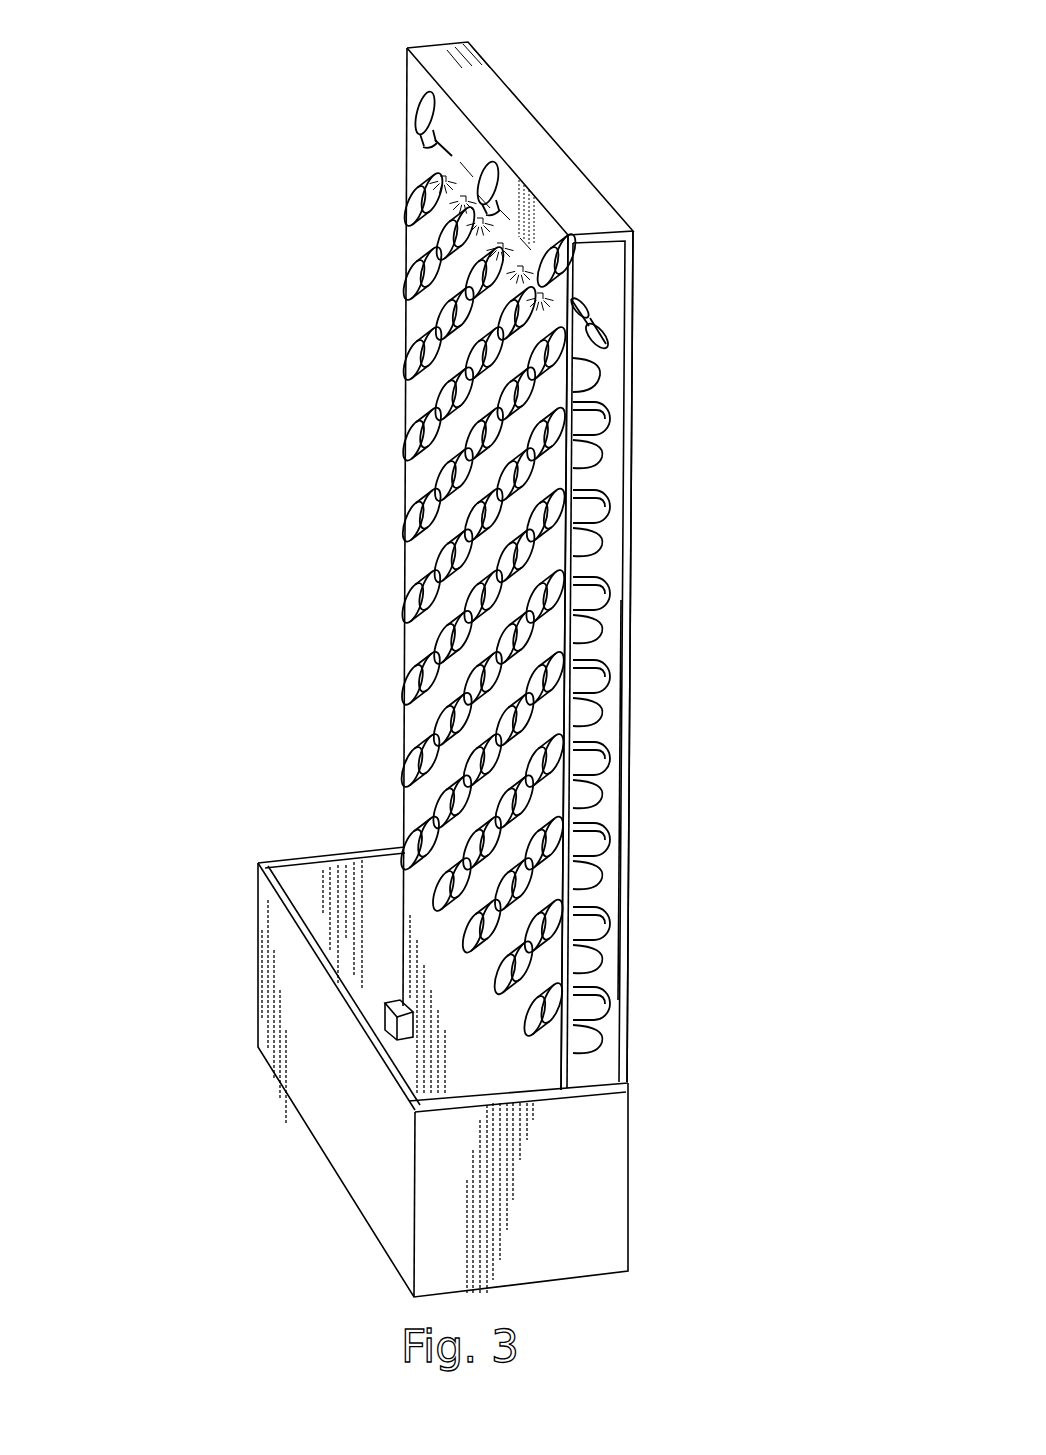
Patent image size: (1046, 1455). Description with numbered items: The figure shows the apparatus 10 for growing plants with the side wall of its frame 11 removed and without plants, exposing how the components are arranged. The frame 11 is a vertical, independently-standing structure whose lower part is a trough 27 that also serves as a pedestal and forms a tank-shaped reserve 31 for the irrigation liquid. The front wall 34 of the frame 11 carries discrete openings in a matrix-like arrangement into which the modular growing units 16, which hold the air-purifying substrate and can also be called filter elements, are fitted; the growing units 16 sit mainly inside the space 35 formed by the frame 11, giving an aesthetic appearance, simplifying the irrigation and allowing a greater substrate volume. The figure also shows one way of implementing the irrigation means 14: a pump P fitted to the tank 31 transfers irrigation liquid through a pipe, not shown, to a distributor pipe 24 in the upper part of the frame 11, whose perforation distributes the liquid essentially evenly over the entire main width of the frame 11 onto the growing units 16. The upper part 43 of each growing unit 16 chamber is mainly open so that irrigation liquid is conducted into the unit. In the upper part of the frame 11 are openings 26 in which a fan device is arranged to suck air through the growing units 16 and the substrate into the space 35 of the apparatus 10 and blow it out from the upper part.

The apparatus 10 is at (410, 568).
The frame 11 is at (567, 203).
The irrigation means 14 is at (598, 288).
The growing units 16 is at (580, 553).
The distributor pipe 24 is at (583, 340).
The openings 26 is at (400, 109).
The trough 27 is at (583, 1162).
The tank-shaped reserve 31 is at (375, 928).
The front wall 34 is at (583, 900).
The space 35 is at (598, 386).
The upper part of the chamber 43 is at (596, 653).
The pump P is at (388, 1013).